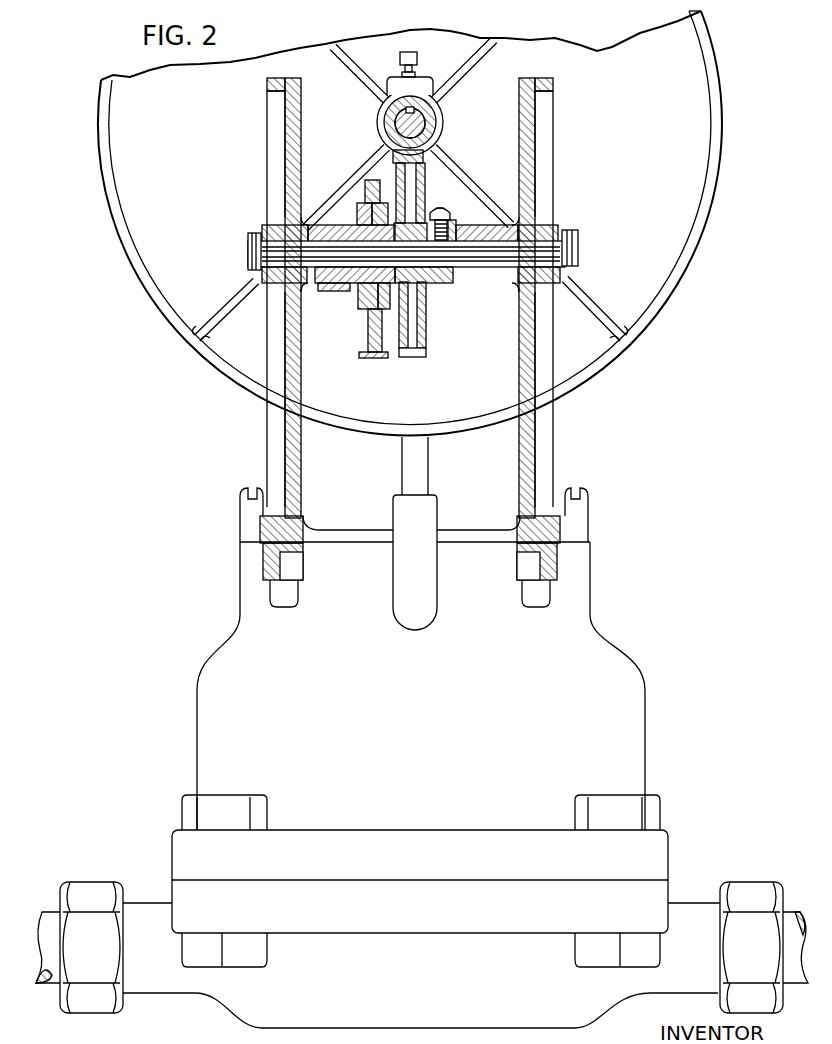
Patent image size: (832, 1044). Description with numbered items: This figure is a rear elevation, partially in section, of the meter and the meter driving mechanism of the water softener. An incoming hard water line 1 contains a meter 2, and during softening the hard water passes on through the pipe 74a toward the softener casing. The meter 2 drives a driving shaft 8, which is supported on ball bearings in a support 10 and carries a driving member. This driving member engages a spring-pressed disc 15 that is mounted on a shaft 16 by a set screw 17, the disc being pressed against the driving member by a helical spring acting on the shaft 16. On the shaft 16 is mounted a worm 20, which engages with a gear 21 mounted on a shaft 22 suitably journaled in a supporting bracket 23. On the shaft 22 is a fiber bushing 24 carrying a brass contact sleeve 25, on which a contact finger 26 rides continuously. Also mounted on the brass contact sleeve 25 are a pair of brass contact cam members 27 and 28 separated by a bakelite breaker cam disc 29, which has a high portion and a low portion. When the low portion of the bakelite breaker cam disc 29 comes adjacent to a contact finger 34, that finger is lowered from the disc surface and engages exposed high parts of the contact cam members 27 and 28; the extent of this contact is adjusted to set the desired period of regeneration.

The incoming hard water line 1 is at (48, 915).
The meter 2 is at (628, 665).
The driving shaft 8 is at (407, 462).
The support 10 is at (393, 499).
The spring-pressed disc 15 is at (111, 207).
The shaft 16 is at (438, 116).
The set screw 17 is at (417, 59).
The worm 20 is at (430, 126).
The gear 21 is at (425, 185).
The shaft 22 is at (487, 262).
The supporting bracket 23 is at (302, 461).
The fiber bushing 24 is at (312, 281).
The brass contact sleeve 25 is at (335, 223).
The contact finger 26 is at (337, 291).
The brass contact cam member 27 is at (361, 309).
The brass contact cam member 28 is at (388, 310).
The bakelite breaker cam disc 29 is at (368, 342).
The contact finger 34 is at (375, 358).
The pipe 74a is at (800, 906).